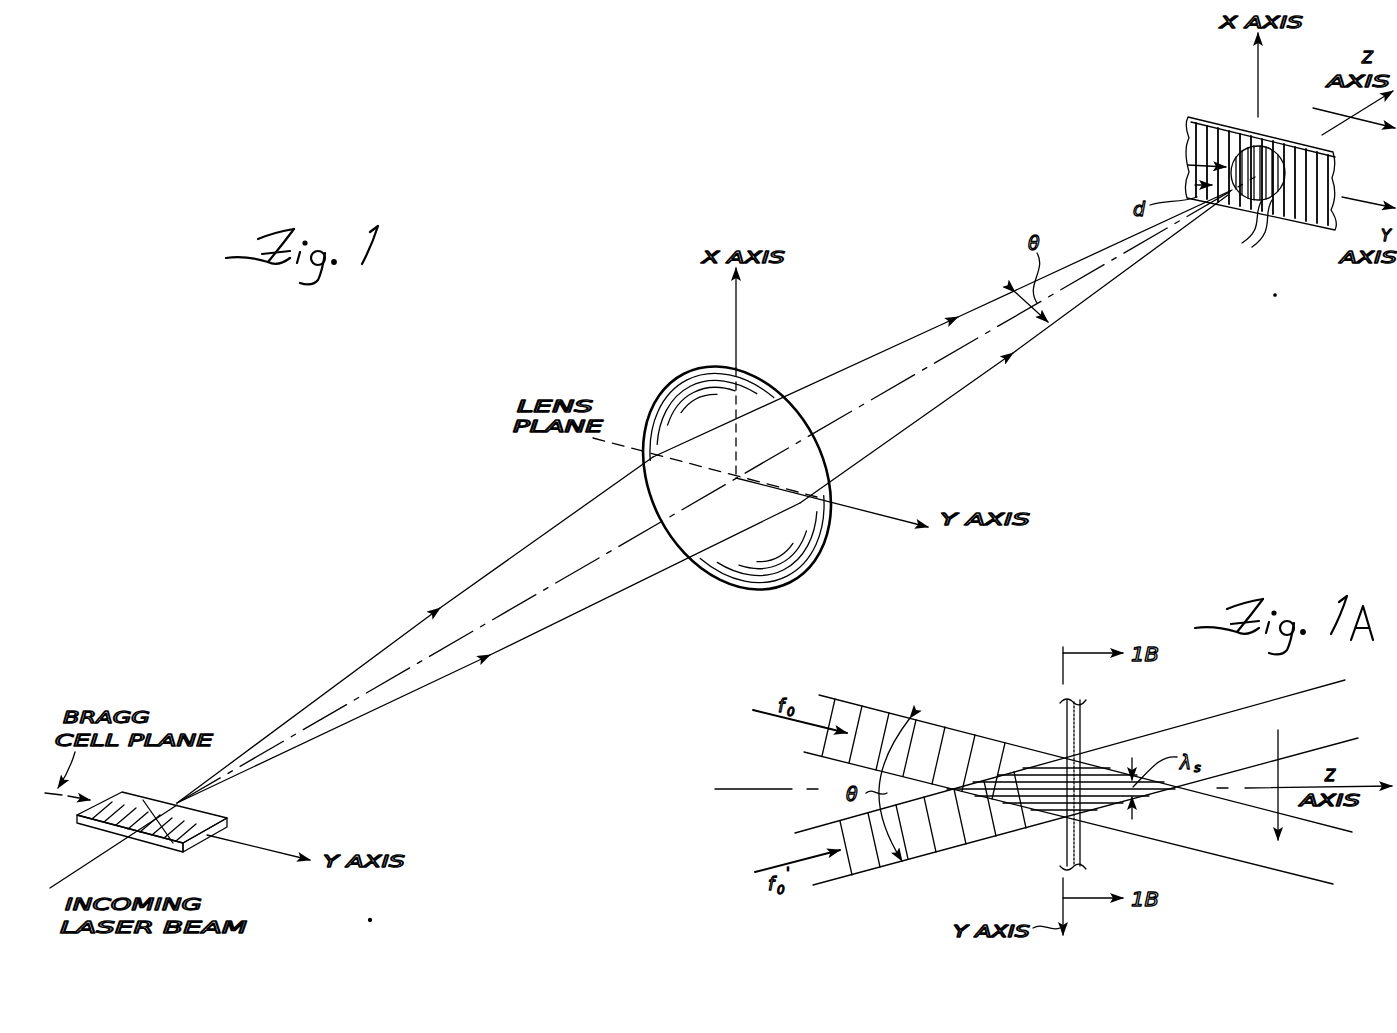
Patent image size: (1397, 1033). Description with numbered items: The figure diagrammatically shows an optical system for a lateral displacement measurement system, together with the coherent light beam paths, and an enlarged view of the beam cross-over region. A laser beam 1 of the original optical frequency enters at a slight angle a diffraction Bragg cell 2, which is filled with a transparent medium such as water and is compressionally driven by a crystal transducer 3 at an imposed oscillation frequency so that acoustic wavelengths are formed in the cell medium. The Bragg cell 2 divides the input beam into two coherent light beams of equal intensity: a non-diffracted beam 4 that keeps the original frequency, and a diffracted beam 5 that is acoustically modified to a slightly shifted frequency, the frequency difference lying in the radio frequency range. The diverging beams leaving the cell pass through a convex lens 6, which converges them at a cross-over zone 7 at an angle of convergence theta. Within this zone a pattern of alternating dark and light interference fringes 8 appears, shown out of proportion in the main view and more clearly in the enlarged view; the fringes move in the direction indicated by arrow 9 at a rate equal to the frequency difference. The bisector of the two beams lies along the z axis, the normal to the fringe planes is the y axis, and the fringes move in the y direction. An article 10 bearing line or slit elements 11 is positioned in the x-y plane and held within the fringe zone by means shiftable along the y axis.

In FIG. 1, the laser beam 1 is at (100, 874).
In FIG. 1, the diffraction Bragg cell 2 is at (130, 792).
In FIG. 1, the crystal transducer 3 is at (232, 822).
In FIG. 1, the non-diffracted beam 4 is at (376, 656).
In FIG. 1, the diffracted beam 5 is at (402, 698).
In FIG. 1, the convex lens 6 is at (748, 573).
In FIG. 1, the cross-over zone 7 is at (1188, 165).
In FIG. 1A, the cross-over zone 7 is at (1025, 767).
In FIG. 1, the interference fringes 8 is at (1270, 160).
In FIG. 1A, the interference fringes 8 is at (1025, 787).
In FIG. 1, the arrow 9 is at (1357, 125).
In FIG. 1A, the arrow 9 is at (1282, 745).
In FIG. 1, the article 10 is at (1180, 143).
In FIG. 1A, the article 10 is at (1078, 731).
In FIG. 1, the line or slit elements 11 is at (1261, 231).